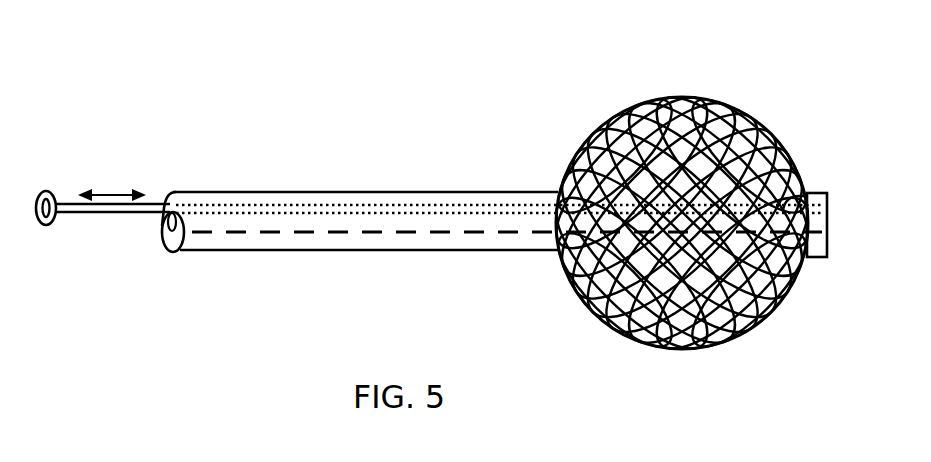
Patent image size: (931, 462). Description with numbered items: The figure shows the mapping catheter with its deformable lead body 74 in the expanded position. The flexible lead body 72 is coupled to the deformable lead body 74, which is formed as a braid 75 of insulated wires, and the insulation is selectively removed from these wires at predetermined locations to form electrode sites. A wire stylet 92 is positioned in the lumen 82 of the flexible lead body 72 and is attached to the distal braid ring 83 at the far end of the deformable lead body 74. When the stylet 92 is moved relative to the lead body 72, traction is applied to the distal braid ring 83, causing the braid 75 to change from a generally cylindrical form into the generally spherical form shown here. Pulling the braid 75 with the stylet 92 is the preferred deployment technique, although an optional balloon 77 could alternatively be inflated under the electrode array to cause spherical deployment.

The flexible lead body 72 is at (165, 148).
The deformable lead body 74 is at (682, 193).
The braid 75 is at (592, 305).
The balloon 77 is at (682, 282).
The lumen 82 is at (170, 222).
The distal braid ring 83 is at (811, 193).
The wire stylet 92 is at (109, 213).